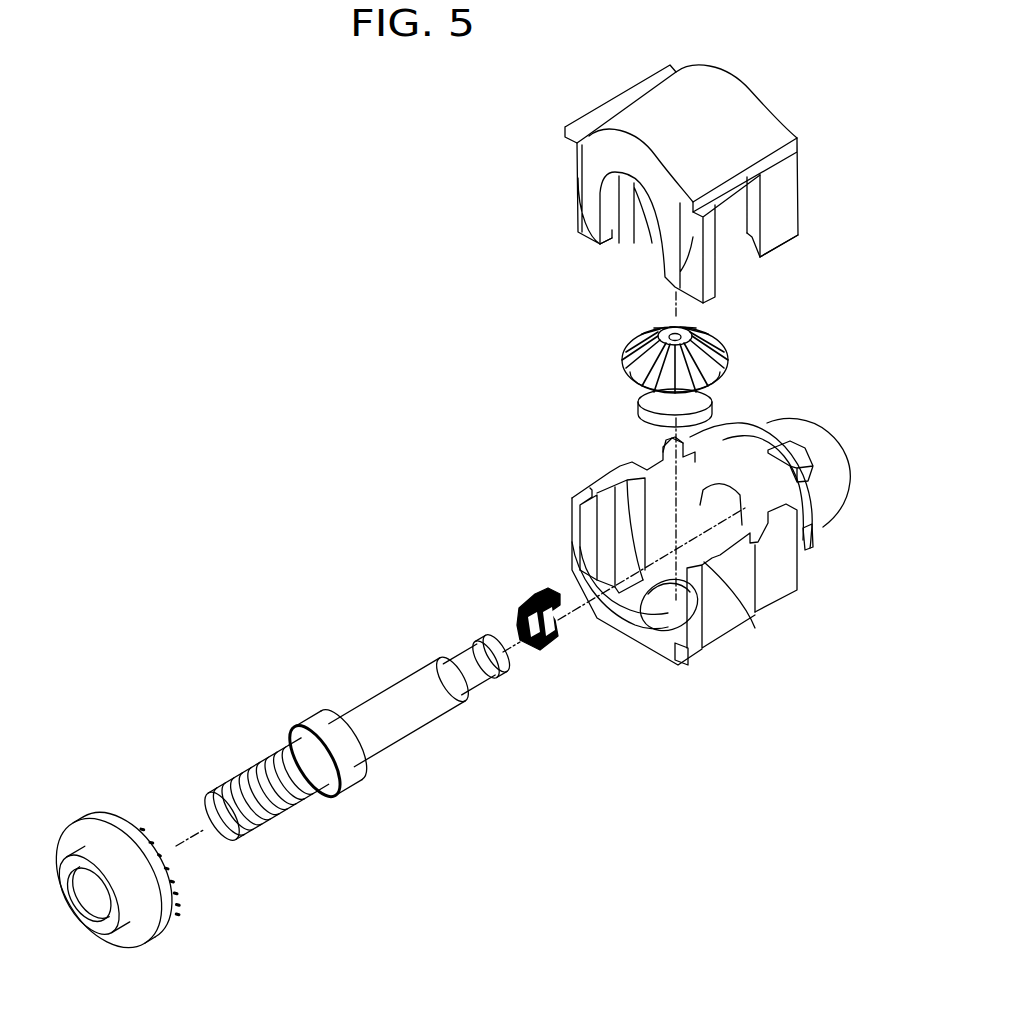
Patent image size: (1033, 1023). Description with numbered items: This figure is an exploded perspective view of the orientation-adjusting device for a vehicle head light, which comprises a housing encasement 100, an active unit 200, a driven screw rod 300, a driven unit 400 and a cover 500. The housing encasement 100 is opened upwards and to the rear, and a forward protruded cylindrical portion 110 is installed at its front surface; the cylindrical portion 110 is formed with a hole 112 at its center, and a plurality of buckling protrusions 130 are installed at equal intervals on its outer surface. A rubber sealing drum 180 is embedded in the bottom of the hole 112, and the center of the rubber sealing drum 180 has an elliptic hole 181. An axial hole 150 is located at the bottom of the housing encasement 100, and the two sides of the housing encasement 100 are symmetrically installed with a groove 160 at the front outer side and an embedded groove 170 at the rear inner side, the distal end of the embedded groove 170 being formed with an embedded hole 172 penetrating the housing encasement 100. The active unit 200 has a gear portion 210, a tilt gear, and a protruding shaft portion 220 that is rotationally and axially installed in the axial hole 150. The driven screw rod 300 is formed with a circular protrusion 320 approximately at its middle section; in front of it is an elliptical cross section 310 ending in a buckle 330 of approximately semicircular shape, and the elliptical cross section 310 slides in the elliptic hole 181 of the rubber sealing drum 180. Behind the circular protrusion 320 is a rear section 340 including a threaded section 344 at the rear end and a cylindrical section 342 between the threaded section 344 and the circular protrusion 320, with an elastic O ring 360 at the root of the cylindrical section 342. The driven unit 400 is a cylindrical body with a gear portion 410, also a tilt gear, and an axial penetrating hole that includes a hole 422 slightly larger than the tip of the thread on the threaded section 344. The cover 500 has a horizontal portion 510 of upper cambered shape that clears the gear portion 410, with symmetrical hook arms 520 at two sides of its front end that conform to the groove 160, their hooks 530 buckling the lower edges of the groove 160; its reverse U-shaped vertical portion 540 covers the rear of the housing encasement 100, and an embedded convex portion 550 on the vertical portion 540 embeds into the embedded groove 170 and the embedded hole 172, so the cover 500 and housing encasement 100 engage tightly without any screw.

The housing encasement 100 is at (722, 668).
The cylindrical portion 110 is at (832, 526).
The hole 112 is at (720, 493).
The buckling protrusions 130 is at (747, 438).
The axial hole 150 is at (657, 625).
The groove 160 is at (648, 460).
The embedded groove 170 is at (572, 542).
The embedded hole 172 is at (688, 650).
The rubber sealing drum 180 is at (520, 598).
The elliptic hole 181 is at (519, 624).
The active unit 200 is at (622, 347).
The gear portion 210 is at (700, 333).
The protruding shaft portion 220 is at (650, 403).
The driven screw rod 300 is at (405, 678).
The elliptical cross section 310 is at (427, 713).
The circular protrusion 320 is at (352, 780).
The buckle 330 is at (502, 657).
The rear section 340 is at (230, 828).
The cylindrical section 342 is at (303, 800).
The threaded section 344 is at (260, 823).
The elastic O ring 360 is at (293, 730).
The driven unit 400 is at (102, 802).
The gear portion 410 is at (77, 828).
The hole 422 is at (85, 922).
The cover 500 is at (728, 70).
The horizontal portion 510 is at (738, 102).
The hook arms 520 is at (787, 197).
The hooks 530 is at (630, 236).
The vertical portion 540 is at (592, 157).
The embedded convex portion 550 is at (612, 241).